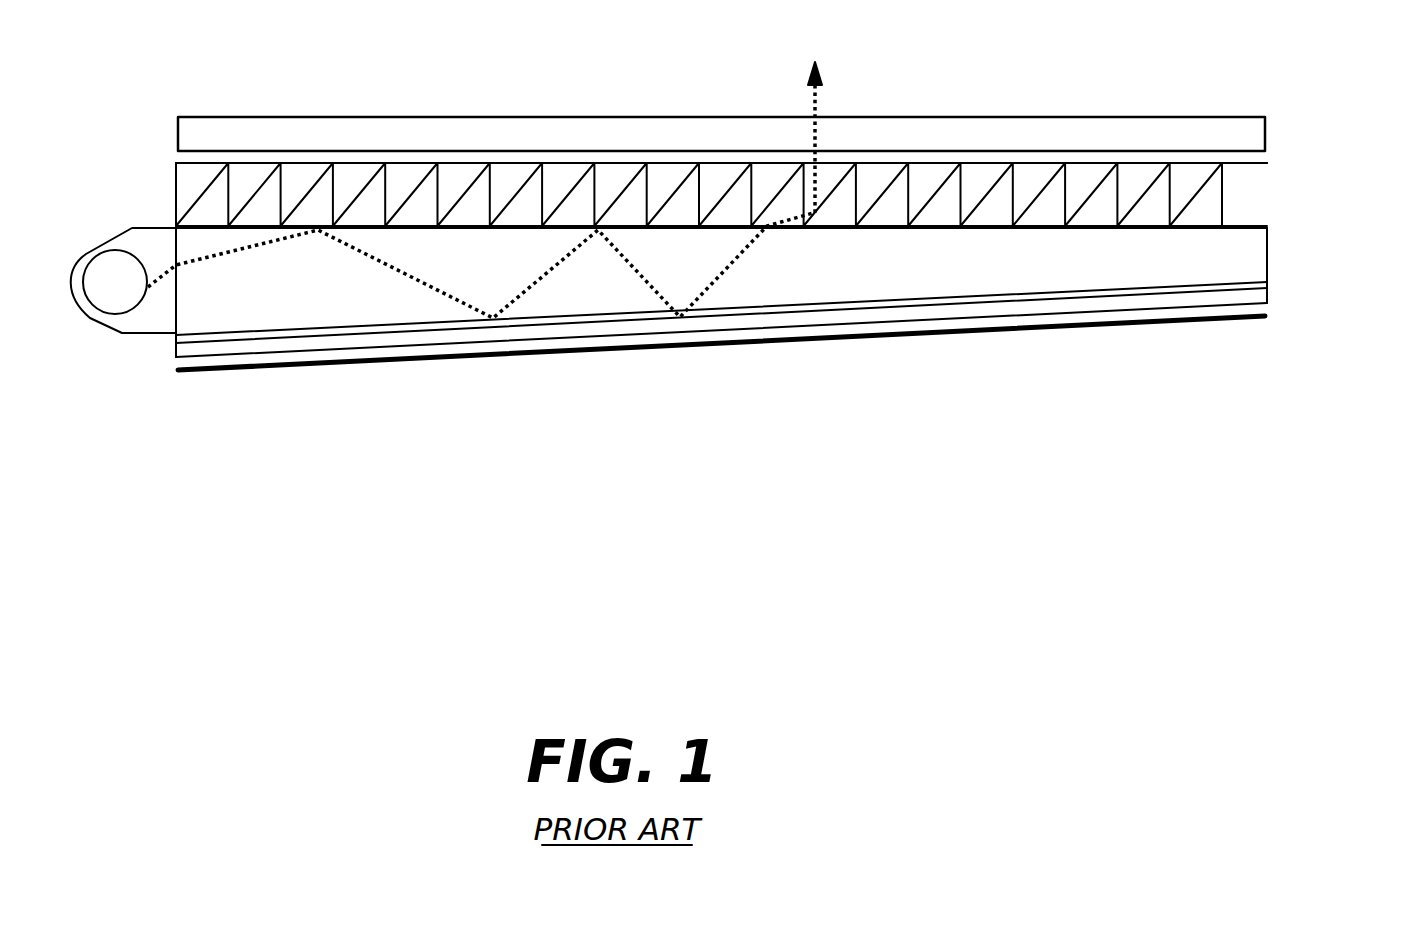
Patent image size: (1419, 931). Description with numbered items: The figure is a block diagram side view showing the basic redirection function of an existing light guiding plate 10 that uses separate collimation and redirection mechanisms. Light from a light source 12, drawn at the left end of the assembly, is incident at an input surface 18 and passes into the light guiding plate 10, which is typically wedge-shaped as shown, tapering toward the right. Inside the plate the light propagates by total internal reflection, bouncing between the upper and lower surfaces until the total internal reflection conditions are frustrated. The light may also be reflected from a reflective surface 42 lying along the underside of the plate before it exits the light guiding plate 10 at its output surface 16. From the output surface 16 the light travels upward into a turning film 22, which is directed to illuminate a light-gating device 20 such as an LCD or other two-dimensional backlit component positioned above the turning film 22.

The light guiding plate 10 is at (1268, 257).
The light source 12 is at (102, 258).
The output surface 16 is at (1250, 228).
The input surface 18 is at (178, 315).
The light-gating device 20 is at (637, 128).
The turning film 22 is at (1255, 182).
The reflective surface 42 is at (712, 343).